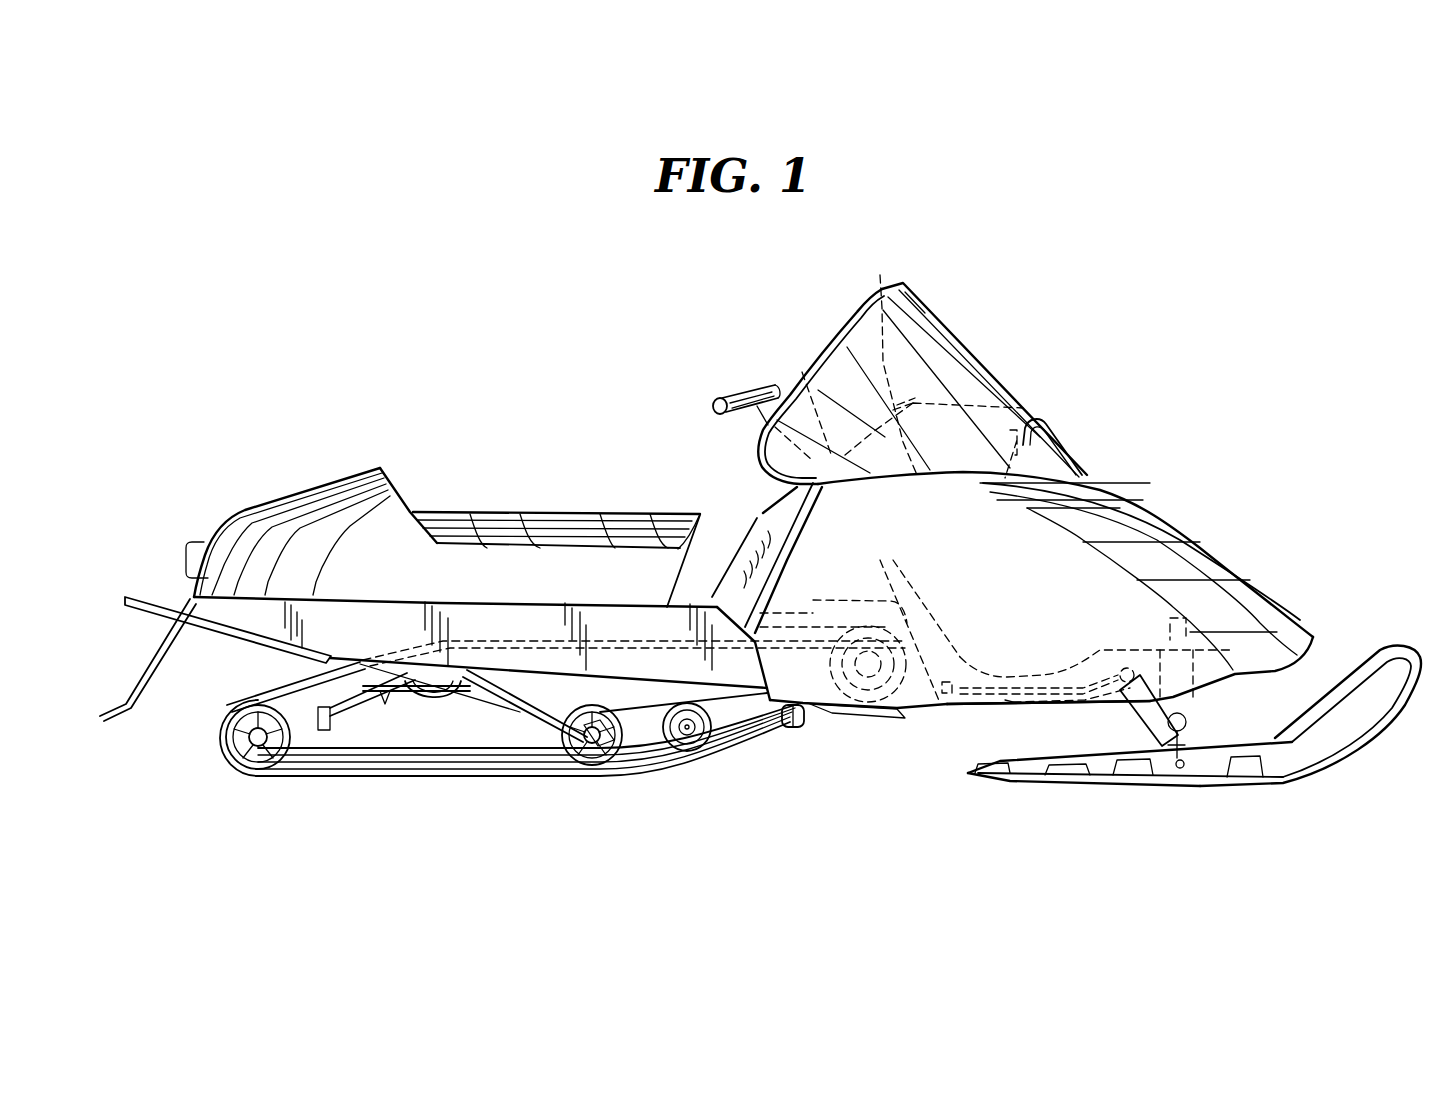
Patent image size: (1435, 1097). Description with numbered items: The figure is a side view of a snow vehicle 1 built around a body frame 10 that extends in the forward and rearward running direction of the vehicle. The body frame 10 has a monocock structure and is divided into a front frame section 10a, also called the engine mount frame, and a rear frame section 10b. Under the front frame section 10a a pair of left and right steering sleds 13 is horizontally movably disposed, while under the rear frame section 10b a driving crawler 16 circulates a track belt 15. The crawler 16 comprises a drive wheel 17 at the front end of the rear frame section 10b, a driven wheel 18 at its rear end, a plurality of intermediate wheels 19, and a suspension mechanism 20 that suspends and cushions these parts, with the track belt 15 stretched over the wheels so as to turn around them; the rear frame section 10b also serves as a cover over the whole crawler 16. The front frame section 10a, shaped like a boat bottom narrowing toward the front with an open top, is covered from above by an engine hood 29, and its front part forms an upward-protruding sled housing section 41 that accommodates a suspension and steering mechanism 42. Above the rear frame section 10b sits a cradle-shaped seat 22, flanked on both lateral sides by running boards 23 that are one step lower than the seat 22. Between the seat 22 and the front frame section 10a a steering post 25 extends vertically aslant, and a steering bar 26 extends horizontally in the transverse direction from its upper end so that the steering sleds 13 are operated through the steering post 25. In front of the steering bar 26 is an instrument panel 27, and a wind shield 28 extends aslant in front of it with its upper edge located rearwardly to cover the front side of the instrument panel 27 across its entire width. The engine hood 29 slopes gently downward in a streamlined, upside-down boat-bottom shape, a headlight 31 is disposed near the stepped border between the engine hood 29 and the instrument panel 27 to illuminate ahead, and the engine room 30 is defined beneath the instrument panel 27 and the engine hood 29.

The snow vehicle 1 is at (608, 305).
The body frame 10 is at (515, 685).
The front frame section 10a is at (1032, 722).
The rear frame section 10b is at (263, 620).
The steering sleds 13 is at (1183, 783).
The track belt 15 is at (533, 780).
The driving crawler 16 is at (713, 780).
The drive wheel 17 is at (817, 730).
The driven wheel 18 is at (250, 758).
The intermediate wheels 19 is at (592, 762).
The suspension mechanism 20 is at (525, 725).
The seat 22 is at (490, 512).
The running boards 23 is at (618, 668).
The steering post 25 is at (765, 505).
The steering bar 26 is at (742, 395).
The instrument panel 27 is at (880, 278).
The wind shield 28 is at (945, 312).
The engine hood 29 is at (1250, 570).
The engine room 30 is at (1270, 623).
The headlight 31 is at (1053, 440).
The sled housing section 41 is at (1290, 673).
The suspension and steering mechanism 42 is at (1203, 728).